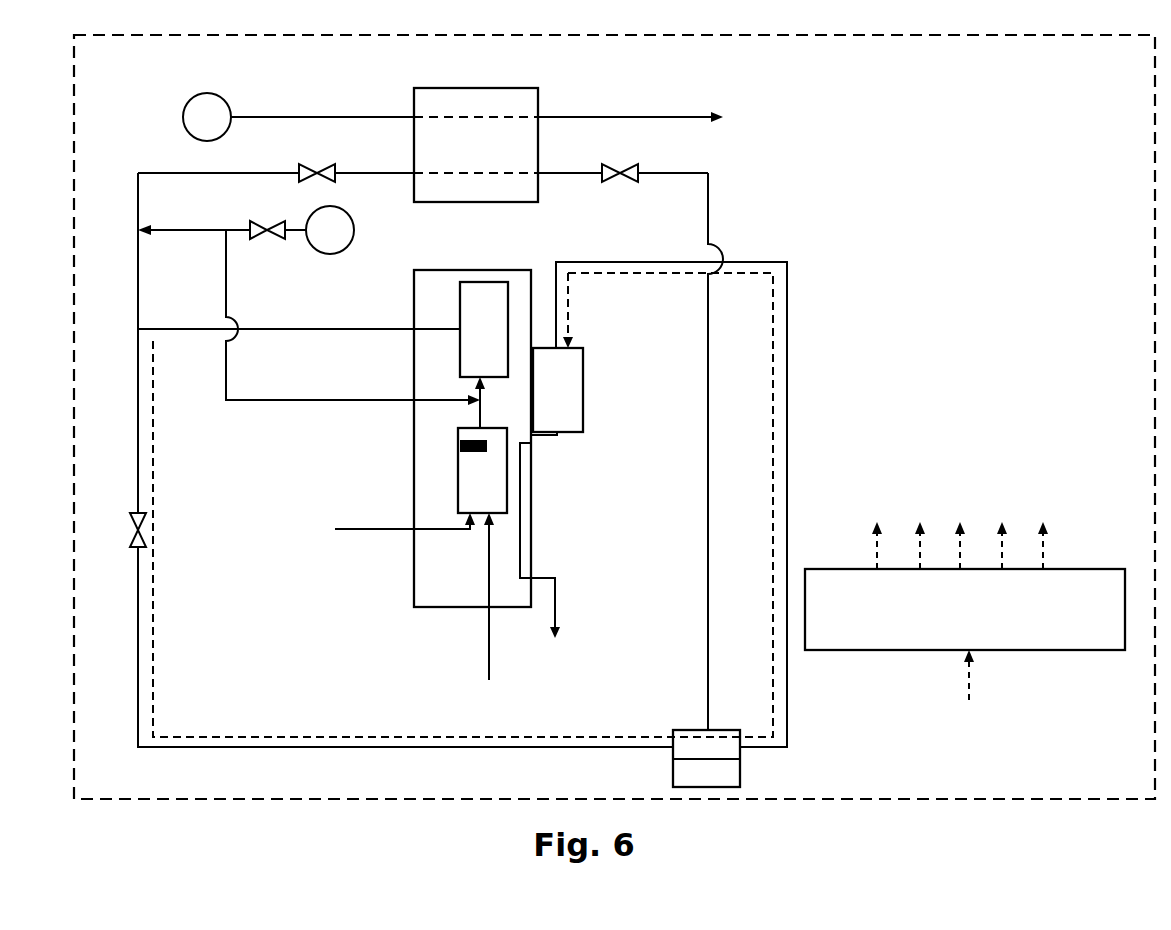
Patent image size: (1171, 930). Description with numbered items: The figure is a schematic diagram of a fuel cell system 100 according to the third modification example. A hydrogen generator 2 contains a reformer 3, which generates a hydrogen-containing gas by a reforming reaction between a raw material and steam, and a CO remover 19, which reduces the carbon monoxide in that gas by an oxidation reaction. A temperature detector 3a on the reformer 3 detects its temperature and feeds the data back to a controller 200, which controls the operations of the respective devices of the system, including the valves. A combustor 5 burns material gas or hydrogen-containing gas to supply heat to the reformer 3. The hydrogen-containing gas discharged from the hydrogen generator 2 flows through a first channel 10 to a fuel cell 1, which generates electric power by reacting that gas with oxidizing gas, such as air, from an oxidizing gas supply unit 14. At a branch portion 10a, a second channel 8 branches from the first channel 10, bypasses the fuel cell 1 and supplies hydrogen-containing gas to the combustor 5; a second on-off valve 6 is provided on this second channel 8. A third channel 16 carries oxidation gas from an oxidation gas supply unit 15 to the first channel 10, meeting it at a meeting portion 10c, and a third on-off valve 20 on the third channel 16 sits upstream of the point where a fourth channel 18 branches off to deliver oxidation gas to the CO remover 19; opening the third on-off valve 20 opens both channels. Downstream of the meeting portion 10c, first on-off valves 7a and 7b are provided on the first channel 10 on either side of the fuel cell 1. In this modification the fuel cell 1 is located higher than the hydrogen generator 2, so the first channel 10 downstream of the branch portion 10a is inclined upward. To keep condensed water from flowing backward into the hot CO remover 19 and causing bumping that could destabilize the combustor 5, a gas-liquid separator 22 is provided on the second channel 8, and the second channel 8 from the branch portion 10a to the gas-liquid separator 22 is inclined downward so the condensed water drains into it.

The fuel cell system 100 is at (192, 18).
The fuel cell 1 is at (540, 90).
The hydrogen generator 2 is at (482, 270).
The reformer 3 is at (359, 565).
The temperature detector 3a is at (458, 455).
The combustor 5 is at (551, 455).
The second on-off valve 6 is at (140, 512).
The first on-off valve 7a is at (310, 164).
The first on-off valve 7b is at (620, 164).
The second channel 8 is at (153, 675).
The first channel 10 is at (307, 327).
The branch portion 10a is at (140, 327).
The meeting portion 10c is at (137, 229).
The oxidizing gas supply unit 14 is at (298, 117).
The oxidation gas supply unit 15 is at (330, 230).
The third channel 16 is at (170, 229).
The fourth channel 18 is at (302, 403).
The CO remover 19 is at (484, 355).
The third on-off valve 20 is at (265, 240).
The gas-liquid separator 22 is at (717, 729).
The controller 200 is at (965, 609).